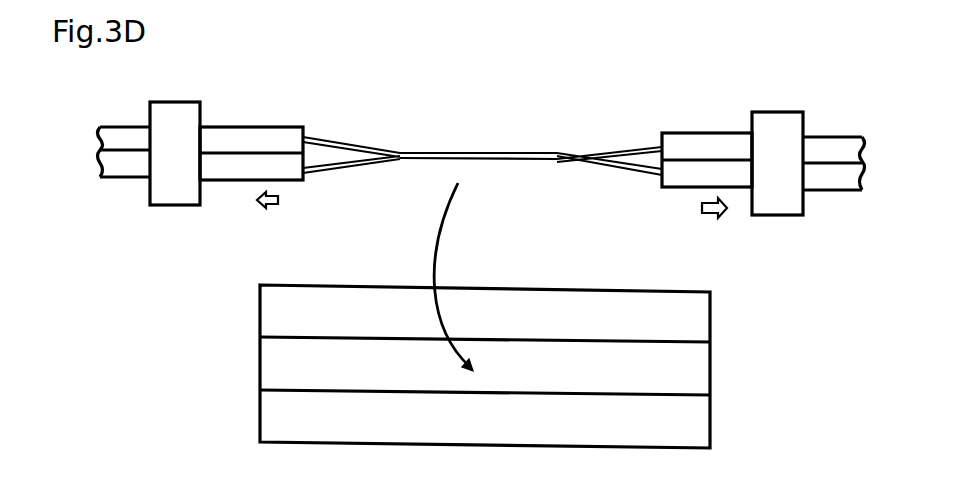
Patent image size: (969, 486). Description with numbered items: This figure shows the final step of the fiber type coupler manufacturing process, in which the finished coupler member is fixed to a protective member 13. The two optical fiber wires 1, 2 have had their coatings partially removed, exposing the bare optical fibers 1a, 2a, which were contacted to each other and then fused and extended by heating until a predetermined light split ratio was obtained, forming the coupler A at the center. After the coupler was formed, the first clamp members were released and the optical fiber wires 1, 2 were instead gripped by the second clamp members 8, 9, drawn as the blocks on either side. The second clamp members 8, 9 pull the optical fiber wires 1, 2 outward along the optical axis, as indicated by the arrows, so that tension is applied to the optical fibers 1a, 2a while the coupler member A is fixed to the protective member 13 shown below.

The optical fiber wire 1 is at (127, 122).
The second clamp member 8 is at (177, 110).
The optical fiber wire 2 is at (240, 165).
The optical fiber 1a is at (327, 140).
The coupler A is at (480, 143).
The optical fiber 2a is at (618, 165).
The second clamp member 9 is at (773, 120).
The protective member 13 is at (265, 415).